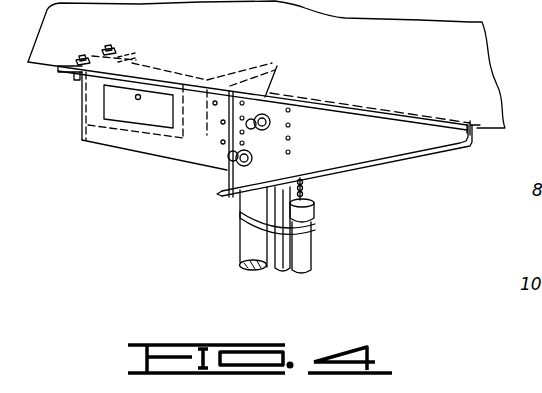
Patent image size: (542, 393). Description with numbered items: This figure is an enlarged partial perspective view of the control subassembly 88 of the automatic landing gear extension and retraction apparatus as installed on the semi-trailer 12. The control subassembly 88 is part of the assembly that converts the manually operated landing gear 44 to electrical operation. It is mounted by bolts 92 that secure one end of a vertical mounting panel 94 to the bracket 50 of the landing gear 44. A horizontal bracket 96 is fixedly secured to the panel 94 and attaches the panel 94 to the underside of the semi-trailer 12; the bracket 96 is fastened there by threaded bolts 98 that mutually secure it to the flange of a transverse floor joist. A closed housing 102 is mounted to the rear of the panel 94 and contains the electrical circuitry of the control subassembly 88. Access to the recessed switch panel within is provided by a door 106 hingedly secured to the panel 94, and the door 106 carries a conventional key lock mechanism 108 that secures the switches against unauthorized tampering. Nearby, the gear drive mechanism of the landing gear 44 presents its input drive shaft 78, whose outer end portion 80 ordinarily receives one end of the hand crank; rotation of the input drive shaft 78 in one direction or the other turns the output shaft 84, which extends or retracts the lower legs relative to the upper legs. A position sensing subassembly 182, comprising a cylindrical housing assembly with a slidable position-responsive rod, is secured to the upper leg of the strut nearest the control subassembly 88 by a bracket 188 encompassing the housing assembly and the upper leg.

The semi-trailer 12 is at (452, 45).
The threaded bolts 98 is at (82, 60).
The key lock mechanism 108 is at (139, 95).
The horizontal bracket 96 is at (72, 78).
The door 106 is at (110, 105).
The closed housing 102 is at (103, 147).
The control subassembly 88 is at (128, 115).
The vertical mounting panel 94 is at (160, 152).
The bolts 92 is at (223, 142).
The output shaft 84 is at (265, 115).
The outer end portion 80 is at (229, 157).
The input drive shaft 78 is at (239, 166).
The bracket 50 is at (392, 142).
The bracket 188 is at (250, 232).
The landing gear 44 is at (249, 251).
The position sensing subassembly 182 is at (305, 247).